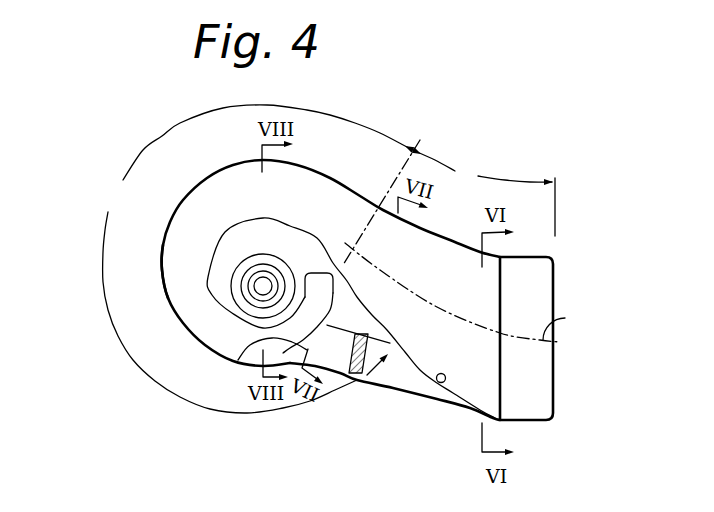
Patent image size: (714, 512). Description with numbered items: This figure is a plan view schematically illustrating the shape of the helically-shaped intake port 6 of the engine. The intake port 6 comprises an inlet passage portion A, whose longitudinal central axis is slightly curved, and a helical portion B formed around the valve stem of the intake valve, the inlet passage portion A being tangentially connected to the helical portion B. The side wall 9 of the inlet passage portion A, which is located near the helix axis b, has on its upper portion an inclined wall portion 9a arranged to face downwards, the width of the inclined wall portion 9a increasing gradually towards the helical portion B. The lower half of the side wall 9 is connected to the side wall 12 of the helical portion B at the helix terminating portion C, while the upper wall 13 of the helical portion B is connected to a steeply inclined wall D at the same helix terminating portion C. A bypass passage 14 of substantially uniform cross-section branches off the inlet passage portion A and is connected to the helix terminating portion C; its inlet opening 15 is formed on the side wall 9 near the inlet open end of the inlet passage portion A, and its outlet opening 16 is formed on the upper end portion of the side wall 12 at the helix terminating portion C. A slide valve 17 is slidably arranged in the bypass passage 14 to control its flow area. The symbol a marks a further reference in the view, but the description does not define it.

The helically-shaped intake port 6 is at (554, 249).
The side wall 9 is at (491, 420).
The inclined wall portion 9a is at (418, 382).
The side wall of the helical portion 12 is at (178, 315).
The upper wall of the helical portion 13 is at (164, 272).
The bypass passage 14 is at (393, 387).
The inlet opening 15 is at (440, 384).
The outlet opening 16 is at (236, 362).
The slide valve 17 is at (360, 377).
The inlet passage portion A is at (483, 191).
The helical portion B is at (259, 259).
The helix terminating portion C is at (318, 307).
The steeply inclined wall D is at (317, 283).
The angle a / duct centerline a is at (572, 318).
The helix axis b is at (260, 289).